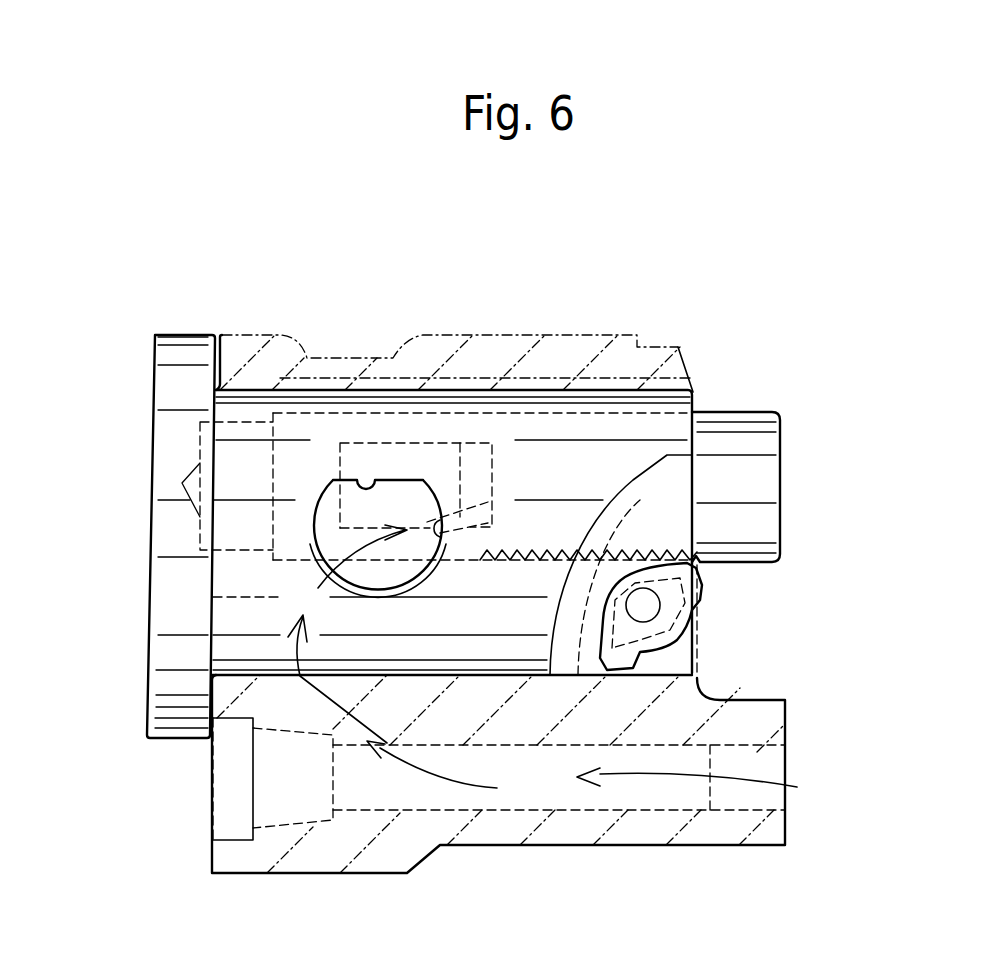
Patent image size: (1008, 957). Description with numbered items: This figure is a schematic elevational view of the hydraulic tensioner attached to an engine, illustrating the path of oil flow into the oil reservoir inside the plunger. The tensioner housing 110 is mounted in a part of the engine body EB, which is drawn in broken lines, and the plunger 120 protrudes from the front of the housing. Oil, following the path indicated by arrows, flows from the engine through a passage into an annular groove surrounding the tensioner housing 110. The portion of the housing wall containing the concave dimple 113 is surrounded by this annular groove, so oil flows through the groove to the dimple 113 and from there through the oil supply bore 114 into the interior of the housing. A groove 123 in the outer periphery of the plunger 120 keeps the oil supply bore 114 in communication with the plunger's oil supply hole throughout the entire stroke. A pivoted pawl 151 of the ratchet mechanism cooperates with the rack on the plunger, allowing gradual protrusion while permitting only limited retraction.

The tensioner housing 110 is at (237, 582).
The concave dimple 113 is at (357, 480).
The oil supply bore 114 is at (460, 443).
The plunger 120 is at (760, 473).
The groove 123 is at (405, 445).
The pivoted pawl 151 is at (707, 580).
The engine body EB is at (570, 357).